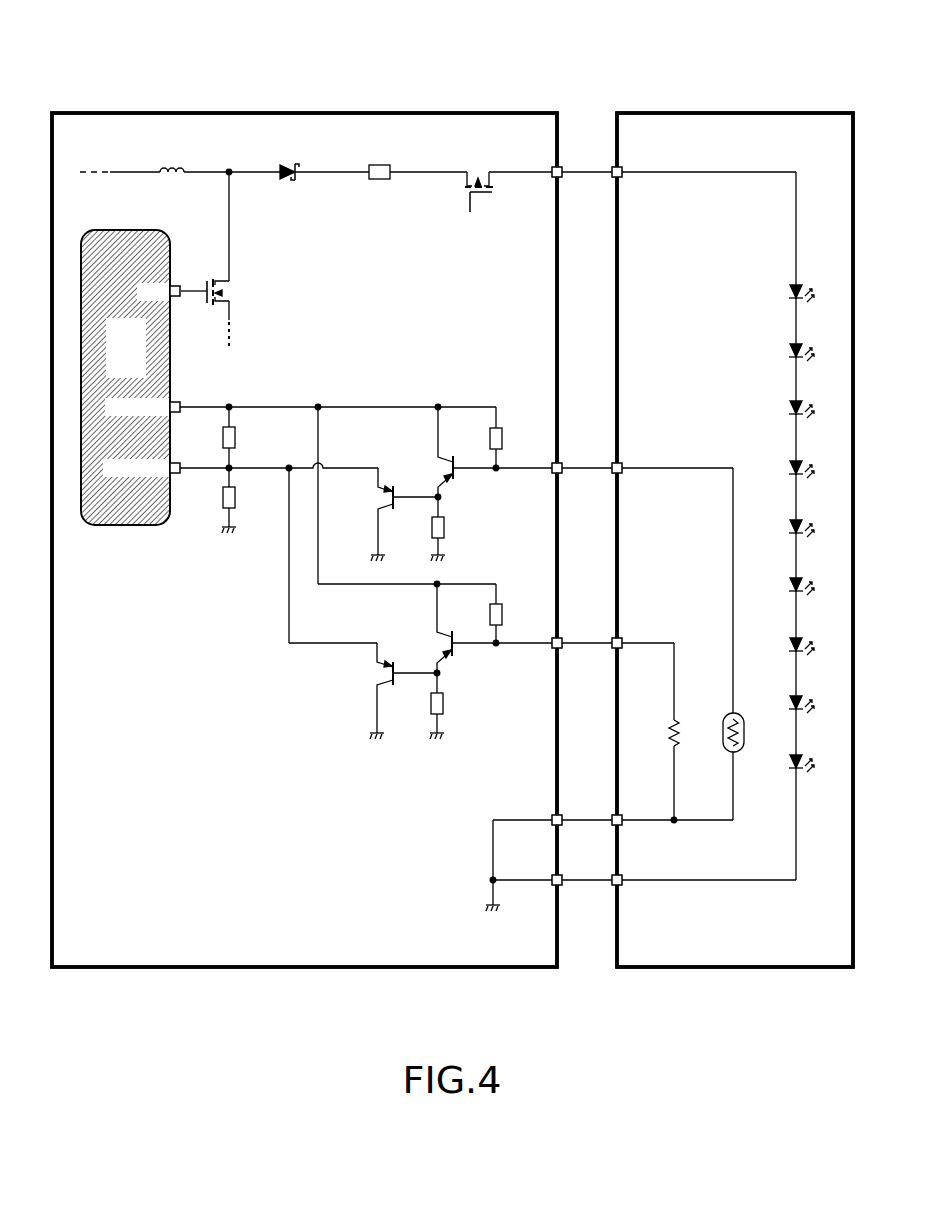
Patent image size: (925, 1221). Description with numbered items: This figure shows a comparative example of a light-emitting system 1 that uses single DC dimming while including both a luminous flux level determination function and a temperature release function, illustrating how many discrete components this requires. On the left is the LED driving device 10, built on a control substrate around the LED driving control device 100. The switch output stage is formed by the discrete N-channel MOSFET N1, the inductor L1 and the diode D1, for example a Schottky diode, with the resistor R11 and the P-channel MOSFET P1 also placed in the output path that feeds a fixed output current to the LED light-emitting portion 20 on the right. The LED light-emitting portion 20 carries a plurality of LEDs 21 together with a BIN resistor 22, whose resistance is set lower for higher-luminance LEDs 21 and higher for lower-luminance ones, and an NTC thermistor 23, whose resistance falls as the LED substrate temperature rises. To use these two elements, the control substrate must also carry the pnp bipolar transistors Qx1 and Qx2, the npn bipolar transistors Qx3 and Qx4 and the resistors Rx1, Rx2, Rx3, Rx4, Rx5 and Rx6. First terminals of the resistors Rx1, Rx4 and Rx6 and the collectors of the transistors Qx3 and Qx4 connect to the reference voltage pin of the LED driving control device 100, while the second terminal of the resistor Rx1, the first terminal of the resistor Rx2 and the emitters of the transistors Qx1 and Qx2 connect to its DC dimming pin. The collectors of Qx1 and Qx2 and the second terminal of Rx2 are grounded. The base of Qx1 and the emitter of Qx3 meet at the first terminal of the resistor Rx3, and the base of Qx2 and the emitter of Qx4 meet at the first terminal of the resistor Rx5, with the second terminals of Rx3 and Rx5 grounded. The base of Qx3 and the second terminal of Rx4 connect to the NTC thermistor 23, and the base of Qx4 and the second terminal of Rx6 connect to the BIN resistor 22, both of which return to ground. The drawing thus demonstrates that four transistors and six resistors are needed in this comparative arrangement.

The light emitting device 1 is at (52, 52).
The LED driving device 10 is at (310, 113).
The LED light-emitting portion 20 is at (740, 113).
The LED driving control device 100 is at (130, 229).
The inductor L1 is at (171, 165).
The diode D1 is at (292, 163).
The resistor R11 is at (380, 165).
The P-channel MOSFET P1 is at (482, 170).
The N-channel MOSFET N1 is at (227, 260).
The resistor Rx1 is at (251, 437).
The resistor Rx2 is at (251, 500).
The resistor Rx3 is at (460, 529).
The resistor Rx4 is at (519, 437).
The resistor Rx5 is at (459, 706).
The resistor Rx6 is at (519, 613).
The pnp bipolar transistor Qx1 is at (385, 514).
The pnp bipolar transistor Qx2 is at (383, 691).
The npn bipolar transistor Qx3 is at (475, 452).
The npn bipolar transistor Qx4 is at (473, 628).
The LED 21 is at (784, 526).
The BIN resistor 22 is at (656, 733).
The NTC thermistor 23 is at (717, 644).